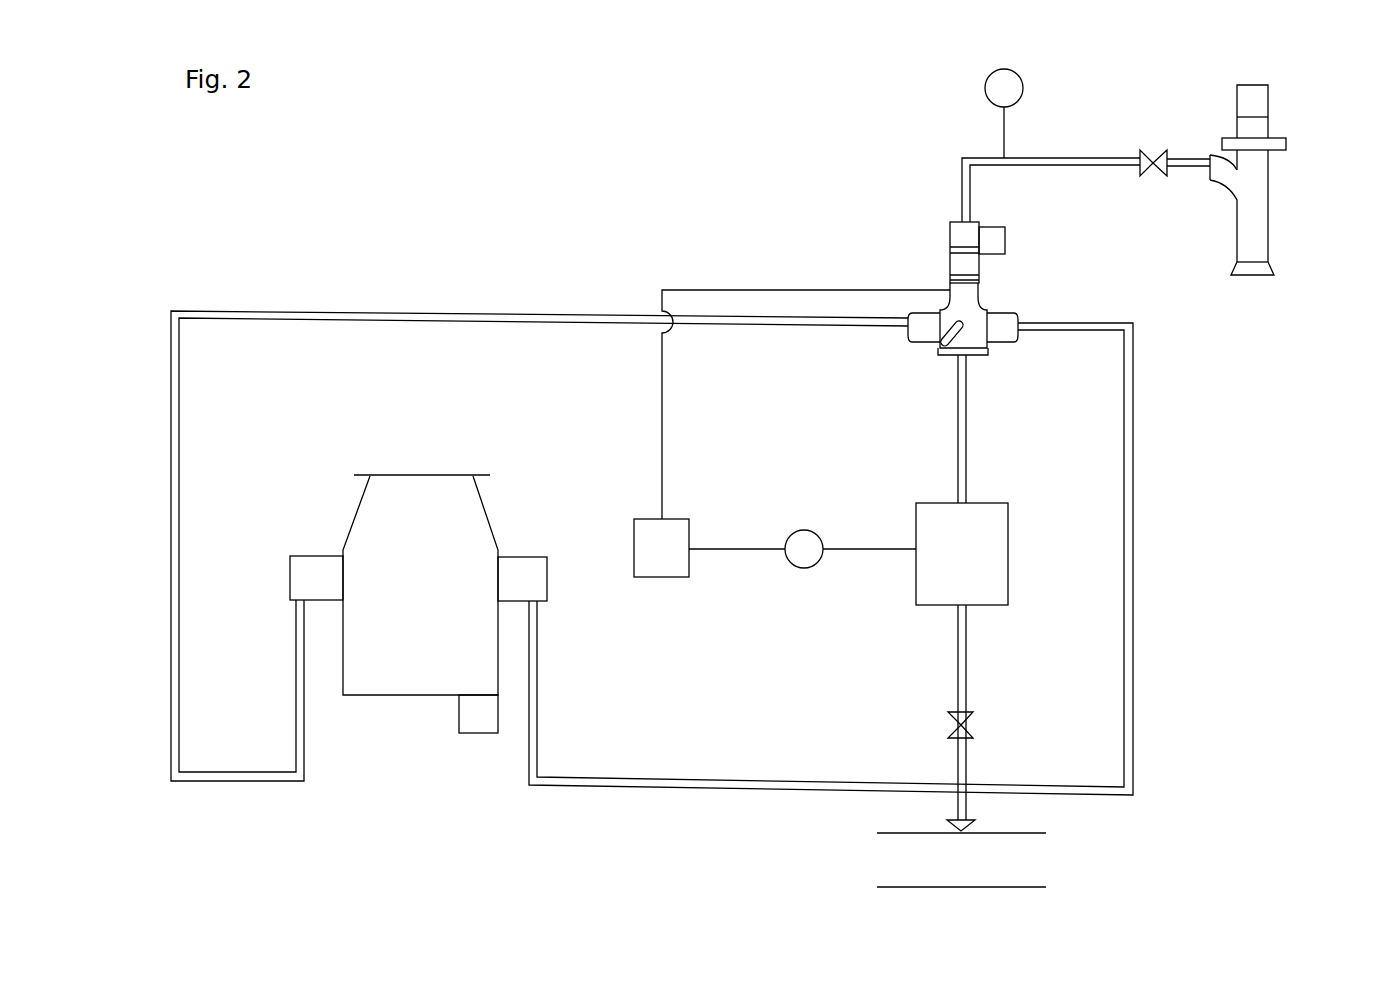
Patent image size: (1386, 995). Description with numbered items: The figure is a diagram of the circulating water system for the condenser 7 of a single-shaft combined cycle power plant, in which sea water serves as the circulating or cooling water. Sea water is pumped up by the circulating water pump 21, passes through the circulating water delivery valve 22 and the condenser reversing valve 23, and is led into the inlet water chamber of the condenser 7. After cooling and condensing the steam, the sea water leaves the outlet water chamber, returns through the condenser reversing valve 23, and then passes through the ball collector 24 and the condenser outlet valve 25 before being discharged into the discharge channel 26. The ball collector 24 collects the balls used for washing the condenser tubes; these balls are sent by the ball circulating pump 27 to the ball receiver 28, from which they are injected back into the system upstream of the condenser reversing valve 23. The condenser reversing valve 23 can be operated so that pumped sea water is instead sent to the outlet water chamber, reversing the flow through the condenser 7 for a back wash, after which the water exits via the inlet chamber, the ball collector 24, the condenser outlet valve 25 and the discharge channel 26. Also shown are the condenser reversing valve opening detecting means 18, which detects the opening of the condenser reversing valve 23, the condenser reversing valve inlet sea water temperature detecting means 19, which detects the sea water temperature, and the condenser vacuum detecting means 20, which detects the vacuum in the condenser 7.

The condenser 7 is at (432, 607).
The condenser reversing valve opening detecting means 18 is at (1008, 233).
The condenser reversing valve inlet sea water temperature detecting means 19 is at (985, 86).
The condenser vacuum detecting means 20 is at (493, 723).
The circulating water pump 21 is at (1273, 223).
The circulating water delivery valve 22 is at (1140, 158).
The condenser reversing valve 23 is at (982, 299).
The ball collector 24 is at (1010, 548).
The condenser outlet valve 25 is at (953, 713).
The discharge channel 26 is at (980, 876).
The ball circulating pump 27 is at (813, 530).
The ball receiver 28 is at (663, 577).